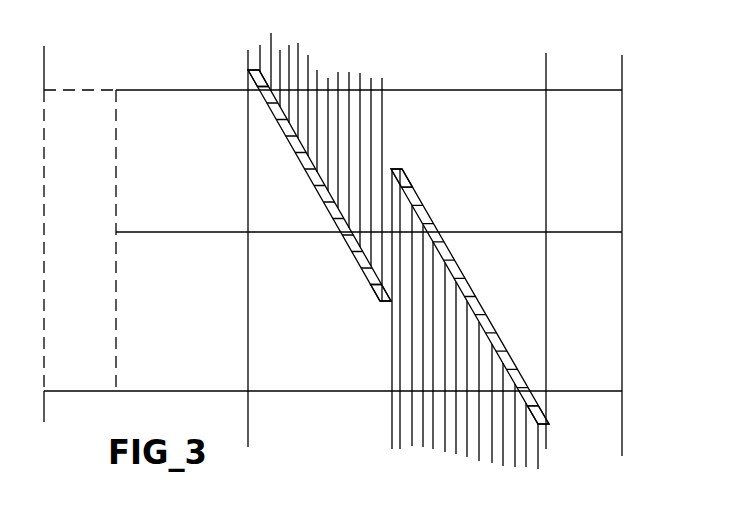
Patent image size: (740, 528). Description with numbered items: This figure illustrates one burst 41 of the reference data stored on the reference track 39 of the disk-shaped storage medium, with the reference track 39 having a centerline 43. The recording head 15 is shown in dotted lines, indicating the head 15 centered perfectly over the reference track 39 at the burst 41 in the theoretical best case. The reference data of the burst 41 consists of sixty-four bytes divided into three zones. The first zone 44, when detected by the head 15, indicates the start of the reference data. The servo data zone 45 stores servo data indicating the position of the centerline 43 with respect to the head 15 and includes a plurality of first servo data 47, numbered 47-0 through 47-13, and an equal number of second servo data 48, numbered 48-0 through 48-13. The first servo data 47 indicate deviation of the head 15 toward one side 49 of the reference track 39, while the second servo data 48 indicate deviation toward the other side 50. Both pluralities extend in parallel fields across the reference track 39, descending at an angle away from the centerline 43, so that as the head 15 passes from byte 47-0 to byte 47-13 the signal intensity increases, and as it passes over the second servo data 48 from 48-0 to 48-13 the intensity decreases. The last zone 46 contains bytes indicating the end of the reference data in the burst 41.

The recording head 15 is at (80, 234).
The reference track 39 is at (670, 126).
The burst 41 is at (227, 34).
The centerline 43 is at (684, 208).
The first 2F zone 44 is at (127, 65).
The servo data zone 45 is at (436, 65).
The second 2F zone 46 is at (576, 71).
The first servo data 47 is at (300, 178).
The first byte of first servo data 47-0 is at (248, 71).
The last byte of first servo data 47-13 is at (380, 290).
The second servo data 48 is at (518, 258).
The first byte of second servo data 48-0 is at (404, 177).
The last byte of second servo data 48-13 is at (541, 418).
The one side of the reference track 49 is at (369, 81).
The other side of the reference track 50 is at (333, 409).